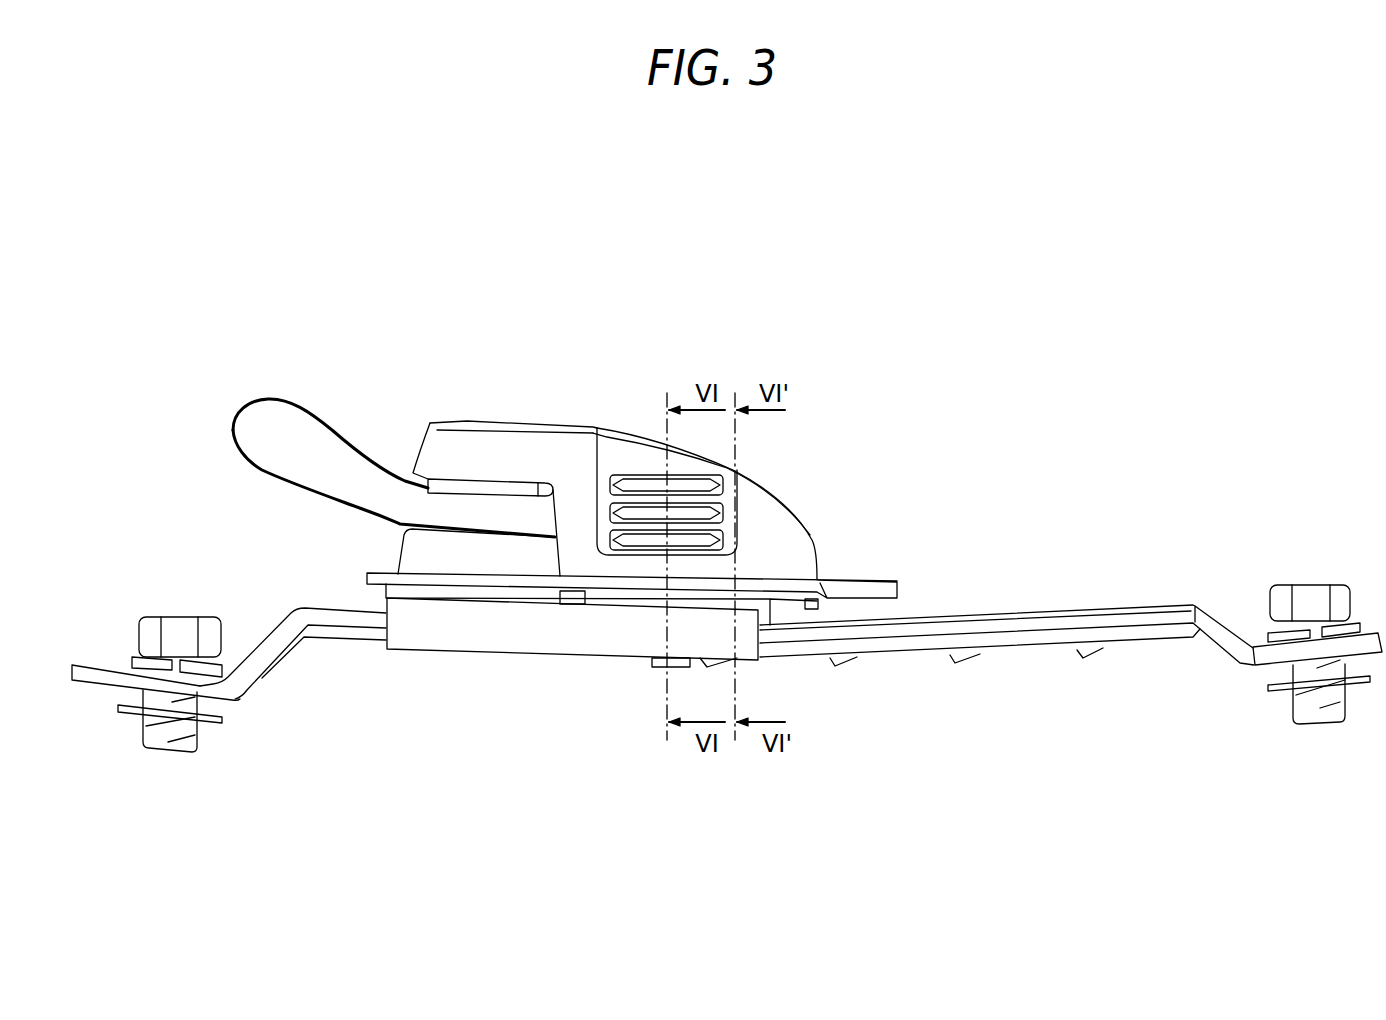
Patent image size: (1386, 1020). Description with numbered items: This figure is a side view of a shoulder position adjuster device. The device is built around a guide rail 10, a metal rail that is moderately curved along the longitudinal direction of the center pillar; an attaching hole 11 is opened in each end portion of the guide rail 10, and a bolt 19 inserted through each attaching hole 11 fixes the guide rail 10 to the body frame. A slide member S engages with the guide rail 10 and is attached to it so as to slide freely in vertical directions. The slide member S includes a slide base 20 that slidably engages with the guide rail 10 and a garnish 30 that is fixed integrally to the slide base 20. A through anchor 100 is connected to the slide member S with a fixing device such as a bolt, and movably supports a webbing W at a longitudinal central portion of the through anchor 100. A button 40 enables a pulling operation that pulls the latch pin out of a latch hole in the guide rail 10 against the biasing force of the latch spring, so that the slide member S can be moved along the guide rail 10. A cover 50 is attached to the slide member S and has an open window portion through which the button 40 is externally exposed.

The guide rail 10 is at (273, 675).
The attaching hole 11 is at (137, 691).
The bolt 19 is at (180, 633).
The slide base 20 is at (510, 638).
The garnish 30 is at (443, 585).
The button 40 is at (618, 450).
The cover 50 is at (508, 440).
The through anchor 100 is at (287, 417).
The webbing W is at (158, 312).
The slide member S is at (425, 710).